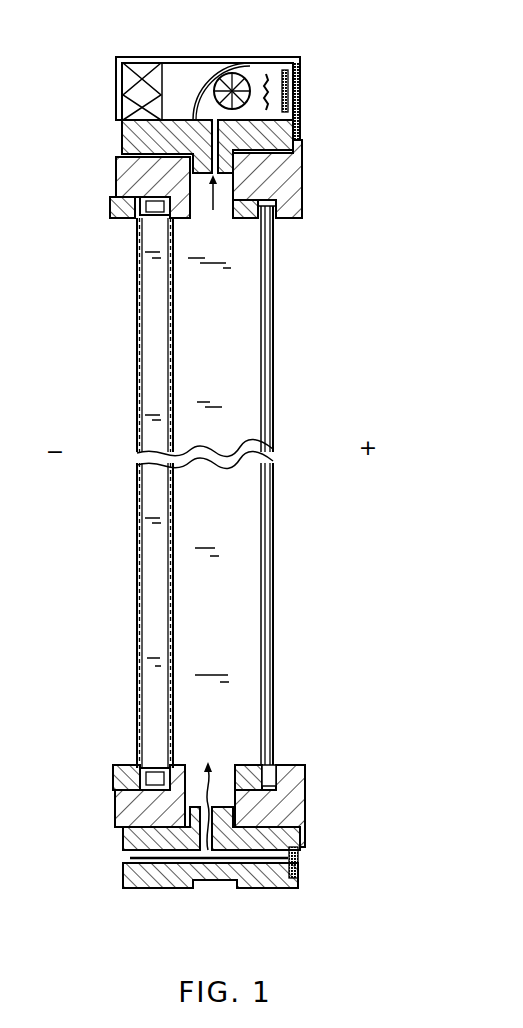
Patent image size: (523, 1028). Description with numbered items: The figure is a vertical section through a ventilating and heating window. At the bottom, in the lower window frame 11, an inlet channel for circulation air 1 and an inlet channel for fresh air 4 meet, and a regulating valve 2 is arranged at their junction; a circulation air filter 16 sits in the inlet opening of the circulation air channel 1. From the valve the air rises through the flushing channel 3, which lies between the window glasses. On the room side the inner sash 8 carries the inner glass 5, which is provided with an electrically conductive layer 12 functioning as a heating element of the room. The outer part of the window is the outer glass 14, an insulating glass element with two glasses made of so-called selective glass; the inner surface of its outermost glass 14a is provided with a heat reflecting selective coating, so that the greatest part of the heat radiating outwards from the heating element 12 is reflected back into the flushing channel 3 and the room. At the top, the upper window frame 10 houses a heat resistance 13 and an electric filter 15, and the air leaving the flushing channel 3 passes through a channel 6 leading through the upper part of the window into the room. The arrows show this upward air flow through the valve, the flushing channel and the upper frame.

The inlet channel for circulation air 1 is at (273, 888).
The regulating valve 2 is at (240, 80).
The flushing channel 3 is at (226, 513).
The inlet channel for fresh air 4 is at (133, 857).
The inner glass 5 is at (273, 407).
The channel leading into the room 6 is at (302, 140).
The inner sash 8 is at (293, 199).
The upper window frame 10 is at (135, 143).
The lower window frame 11 is at (140, 890).
The electrically conductive layer 12 is at (267, 343).
The heat resistance 13 is at (271, 74).
The outer glass 14 is at (150, 533).
The outer glass of the insulating glass element 14a is at (137, 328).
The electric filter 15 is at (298, 90).
The circulation air filter 16 is at (300, 856).